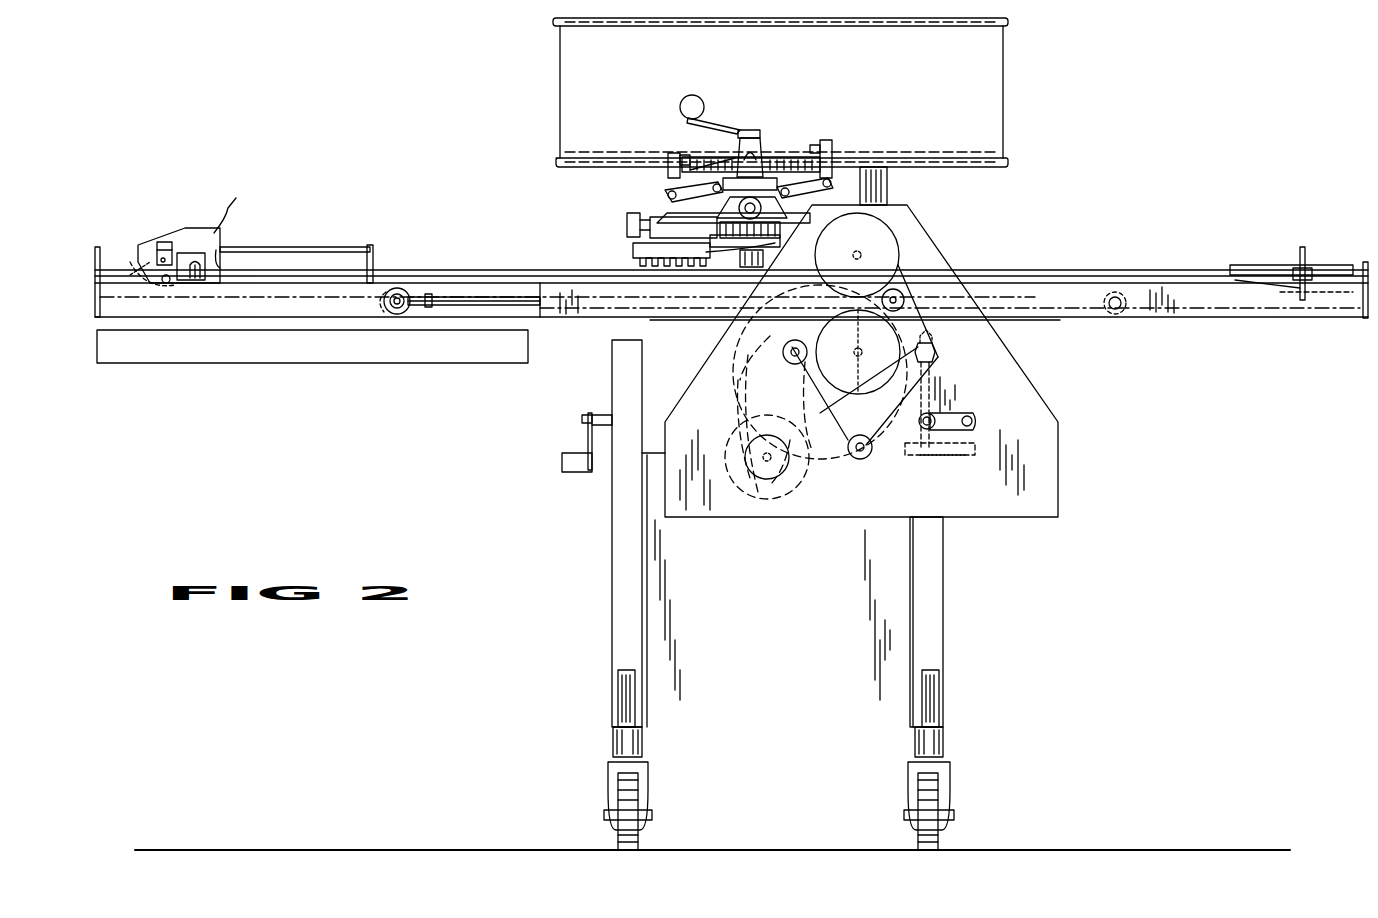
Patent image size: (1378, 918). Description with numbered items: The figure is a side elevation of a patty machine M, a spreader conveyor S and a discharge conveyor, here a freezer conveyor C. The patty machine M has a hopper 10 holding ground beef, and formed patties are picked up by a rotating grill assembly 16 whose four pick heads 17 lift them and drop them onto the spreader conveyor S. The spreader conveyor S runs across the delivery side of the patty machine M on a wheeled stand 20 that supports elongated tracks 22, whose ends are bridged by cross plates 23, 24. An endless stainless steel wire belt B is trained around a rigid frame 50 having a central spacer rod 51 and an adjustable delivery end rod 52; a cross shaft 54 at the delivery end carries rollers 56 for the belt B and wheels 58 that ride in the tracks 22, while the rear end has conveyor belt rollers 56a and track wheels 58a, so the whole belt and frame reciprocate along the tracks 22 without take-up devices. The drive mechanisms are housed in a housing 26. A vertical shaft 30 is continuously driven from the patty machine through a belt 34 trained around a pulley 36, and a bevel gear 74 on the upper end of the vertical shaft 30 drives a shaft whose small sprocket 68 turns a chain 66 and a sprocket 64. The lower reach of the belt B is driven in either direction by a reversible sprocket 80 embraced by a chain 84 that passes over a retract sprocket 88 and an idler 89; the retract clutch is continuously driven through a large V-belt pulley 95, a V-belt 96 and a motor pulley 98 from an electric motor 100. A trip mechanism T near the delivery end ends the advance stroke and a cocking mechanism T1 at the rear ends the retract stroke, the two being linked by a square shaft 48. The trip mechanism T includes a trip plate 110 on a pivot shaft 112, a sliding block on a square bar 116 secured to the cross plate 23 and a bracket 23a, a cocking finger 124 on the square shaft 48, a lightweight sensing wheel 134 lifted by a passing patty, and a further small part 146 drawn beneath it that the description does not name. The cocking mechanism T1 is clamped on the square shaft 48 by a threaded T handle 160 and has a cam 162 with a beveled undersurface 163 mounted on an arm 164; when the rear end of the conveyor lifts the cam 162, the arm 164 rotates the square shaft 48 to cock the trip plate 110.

The hopper 10 is at (557, 62).
The patty machine M is at (1020, 76).
The rotating grill assembly 16 is at (662, 186).
The pick heads 17 is at (775, 243).
The wheeled stand 20 is at (612, 386).
The tracks 22 is at (548, 316).
The cross plate 23 is at (97, 247).
The bracket 23a is at (366, 250).
The cross plate 24 is at (1365, 320).
The housing 26 is at (1033, 399).
The vertical shaft 30 is at (975, 380).
The belt 34 is at (915, 452).
The pulley 36 is at (938, 455).
The square shaft 48 is at (292, 276).
The rigid frame 50 is at (448, 296).
The spacer rod 51 is at (481, 305).
The delivery end rod 52 is at (428, 308).
The cross shaft 54 is at (397, 288).
The rollers 56 is at (388, 301).
The conveyor belt rollers 56a is at (1108, 314).
The wheels 58 is at (392, 313).
The track wheels 58a is at (1125, 285).
The sprocket 64 is at (905, 262).
The chain 66 is at (912, 274).
The small sprocket 68 is at (935, 336).
The bevel gear 74 is at (942, 356).
The reversible sprocket 80 is at (825, 318).
The chain 84 is at (905, 392).
The retract sprocket 88 is at (795, 368).
The idler 89 is at (838, 455).
The V-belt pulley 95 is at (735, 392).
The V-belt 96 is at (740, 418).
The motor pulley 98 is at (805, 485).
The electric motor 100 is at (770, 500).
The trip plate 110 is at (222, 230).
The pivot shaft 112 is at (220, 252).
The square bar 116 is at (294, 248).
The cocking finger 124 is at (196, 280).
The sensing wheel 134 is at (132, 258).
The roller 146 is at (112, 292).
The threaded T handle 160 is at (1297, 292).
The cam 162 is at (1325, 265).
The beveled undersurface 163 is at (1300, 288).
The arm 164 is at (1298, 268).
The wire belt B is at (1042, 288).
The freezer conveyor C is at (213, 366).
The spreader conveyor S is at (605, 278).
The trip mechanism T is at (170, 228).
The cocking mechanism T1 is at (1240, 263).